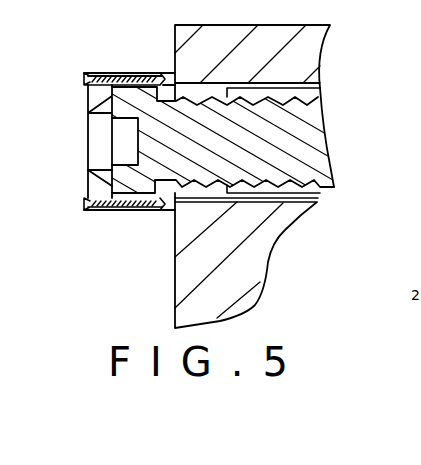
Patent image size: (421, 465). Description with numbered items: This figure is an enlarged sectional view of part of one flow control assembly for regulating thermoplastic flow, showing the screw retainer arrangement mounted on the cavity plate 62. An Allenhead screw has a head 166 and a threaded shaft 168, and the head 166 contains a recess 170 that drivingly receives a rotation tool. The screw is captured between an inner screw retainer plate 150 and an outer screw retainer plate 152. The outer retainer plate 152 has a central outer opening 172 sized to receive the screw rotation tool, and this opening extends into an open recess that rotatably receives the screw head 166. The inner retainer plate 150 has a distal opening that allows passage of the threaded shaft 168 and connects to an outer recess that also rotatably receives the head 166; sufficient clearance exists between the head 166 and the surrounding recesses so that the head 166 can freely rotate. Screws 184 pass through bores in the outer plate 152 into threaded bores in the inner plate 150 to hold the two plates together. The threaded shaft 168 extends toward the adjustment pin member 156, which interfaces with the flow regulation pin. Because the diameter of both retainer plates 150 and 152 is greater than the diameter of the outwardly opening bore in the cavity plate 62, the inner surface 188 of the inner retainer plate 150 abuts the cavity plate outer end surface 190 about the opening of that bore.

The cavity plate 62 is at (286, 26).
The inner screw retainer plate 150 is at (143, 73).
The outer screw retainer plate 152 is at (88, 182).
The adjustment pin member 156 is at (322, 186).
The head 166 is at (110, 99).
The threaded shaft 168 is at (308, 128).
The recess 170 is at (128, 135).
The central outer opening 172 is at (103, 167).
The screws 184 is at (84, 78).
The inner surface 188 is at (178, 90).
The outer end surface 190 is at (175, 237).